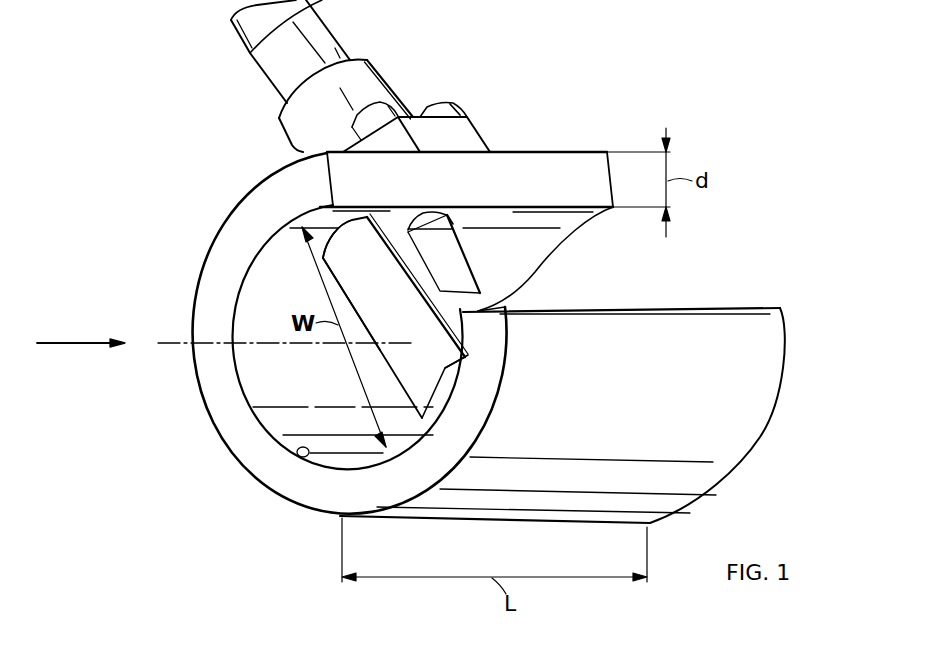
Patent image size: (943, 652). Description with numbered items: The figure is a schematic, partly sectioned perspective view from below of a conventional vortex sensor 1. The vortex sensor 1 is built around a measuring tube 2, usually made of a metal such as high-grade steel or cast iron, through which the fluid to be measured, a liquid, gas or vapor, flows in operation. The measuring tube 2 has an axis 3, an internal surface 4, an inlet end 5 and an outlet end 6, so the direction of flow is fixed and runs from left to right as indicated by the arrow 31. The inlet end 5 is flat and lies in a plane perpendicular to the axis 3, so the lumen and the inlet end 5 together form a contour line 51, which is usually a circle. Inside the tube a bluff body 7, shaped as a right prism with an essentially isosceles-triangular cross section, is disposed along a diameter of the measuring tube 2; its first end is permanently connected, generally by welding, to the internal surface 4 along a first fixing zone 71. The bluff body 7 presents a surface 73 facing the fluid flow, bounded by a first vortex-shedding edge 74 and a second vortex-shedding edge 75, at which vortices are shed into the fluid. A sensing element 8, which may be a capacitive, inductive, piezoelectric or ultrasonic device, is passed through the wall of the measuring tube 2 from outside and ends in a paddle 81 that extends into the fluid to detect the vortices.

The vortex sensor 1 is at (605, 115).
The measuring tube 2 is at (765, 362).
The axis 3 is at (167, 343).
The arrow 31 is at (67, 345).
The internal surface 4 is at (273, 415).
The inlet end 5 is at (238, 220).
The contour line 51 is at (303, 458).
The outlet end 6 is at (760, 443).
The bluff body 7 is at (412, 210).
The first fixing zone 71 is at (333, 240).
The surface facing fluid flow 73 is at (443, 368).
The first vortex-shedding edge 74 is at (333, 280).
The second vortex-shedding edge 75 is at (470, 310).
The sensing element 8 is at (370, 80).
The paddle 81 is at (447, 263).